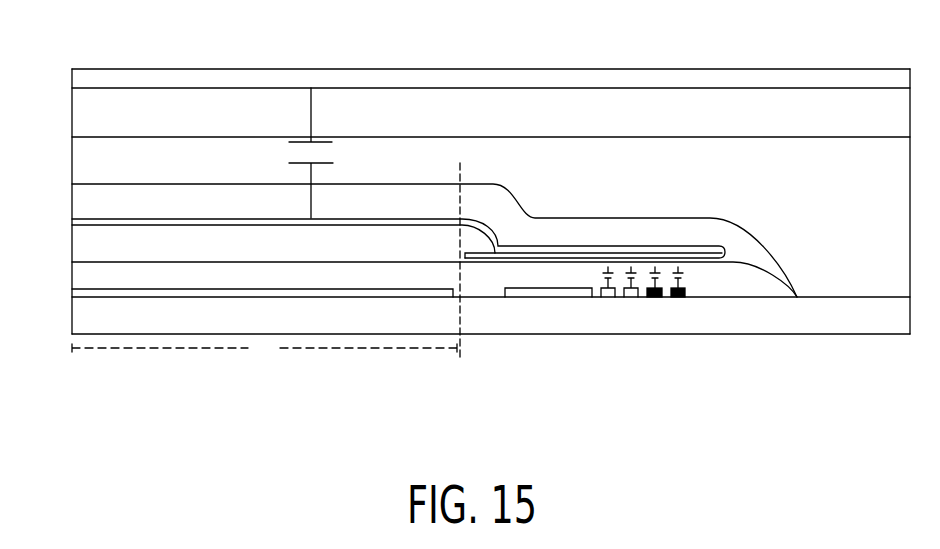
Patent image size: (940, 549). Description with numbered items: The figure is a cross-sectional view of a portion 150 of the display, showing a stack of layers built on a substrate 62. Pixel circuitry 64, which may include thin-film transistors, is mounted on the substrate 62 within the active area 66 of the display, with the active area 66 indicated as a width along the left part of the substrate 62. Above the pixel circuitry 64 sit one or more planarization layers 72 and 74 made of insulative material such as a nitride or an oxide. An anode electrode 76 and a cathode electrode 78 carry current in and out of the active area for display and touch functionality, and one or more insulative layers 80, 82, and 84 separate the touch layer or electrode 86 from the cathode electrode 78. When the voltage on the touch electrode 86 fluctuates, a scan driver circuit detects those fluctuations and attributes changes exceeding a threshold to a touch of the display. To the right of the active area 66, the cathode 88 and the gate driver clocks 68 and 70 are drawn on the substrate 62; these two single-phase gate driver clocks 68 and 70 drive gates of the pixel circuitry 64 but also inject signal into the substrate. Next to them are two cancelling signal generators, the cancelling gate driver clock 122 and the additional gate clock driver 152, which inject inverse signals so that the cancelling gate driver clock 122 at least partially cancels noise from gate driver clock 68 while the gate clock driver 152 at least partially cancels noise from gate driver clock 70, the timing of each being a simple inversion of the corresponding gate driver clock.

The portion of the display 150 is at (155, 388).
The touch layer/electrode 86 is at (697, 78).
The insulative layer 84 is at (145, 122).
The insulative layer 82 is at (145, 173).
The insulative layer 80 is at (145, 210).
The cathode electrode 78 is at (75, 223).
The anode electrode 76 is at (489, 260).
The planarization layer 74 is at (145, 257).
The planarization layer 72 is at (145, 287).
The pixel circuitry 64 is at (78, 294).
The substrate 62 is at (252, 331).
The active area 66 is at (266, 263).
The cathode 88 is at (550, 292).
The gate driver clock 68 is at (607, 292).
The gate driver clock 70 is at (632, 292).
The cancelling gate driver clock 122 is at (658, 292).
The gate clock driver 152 is at (690, 296).